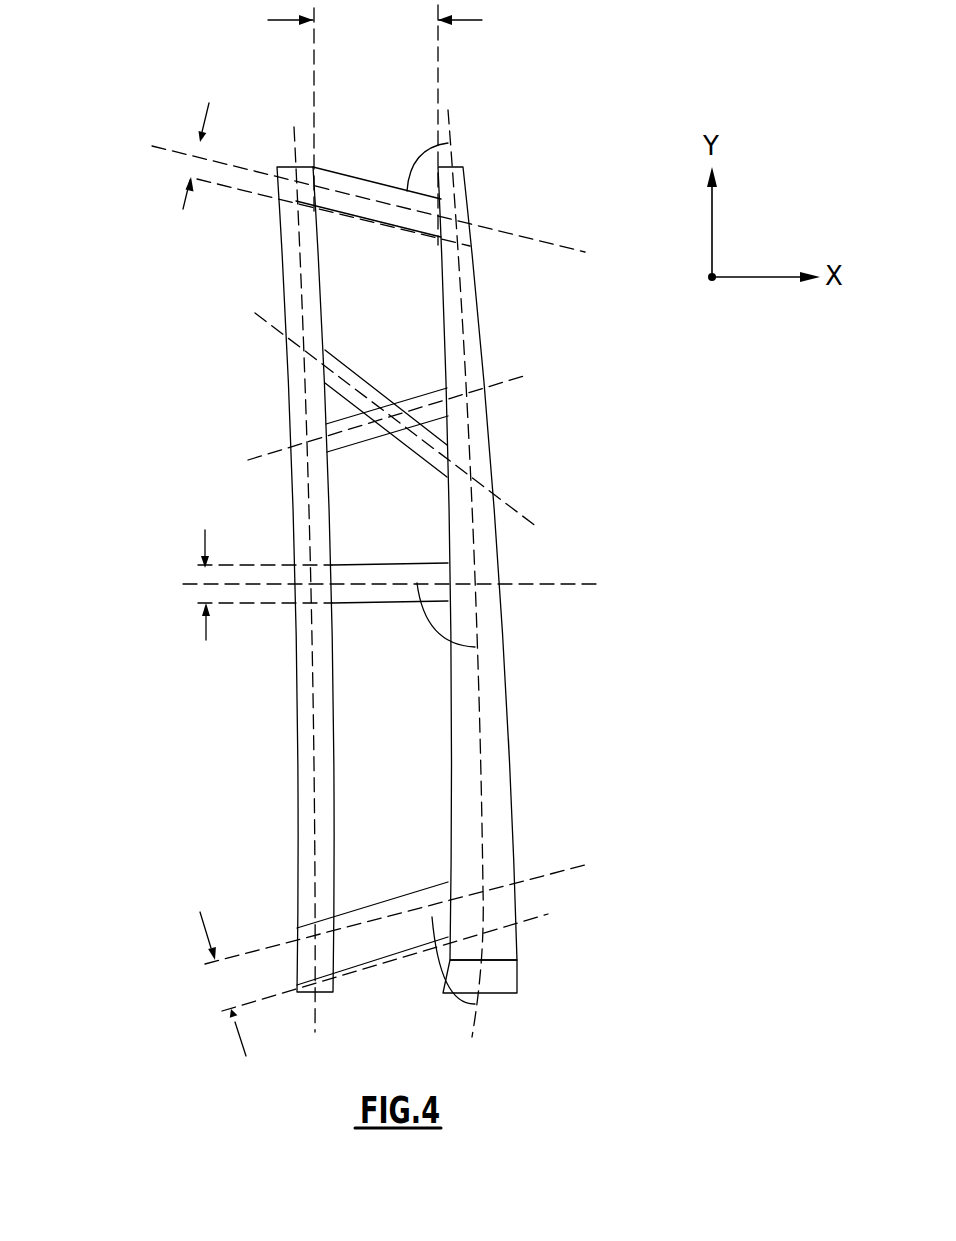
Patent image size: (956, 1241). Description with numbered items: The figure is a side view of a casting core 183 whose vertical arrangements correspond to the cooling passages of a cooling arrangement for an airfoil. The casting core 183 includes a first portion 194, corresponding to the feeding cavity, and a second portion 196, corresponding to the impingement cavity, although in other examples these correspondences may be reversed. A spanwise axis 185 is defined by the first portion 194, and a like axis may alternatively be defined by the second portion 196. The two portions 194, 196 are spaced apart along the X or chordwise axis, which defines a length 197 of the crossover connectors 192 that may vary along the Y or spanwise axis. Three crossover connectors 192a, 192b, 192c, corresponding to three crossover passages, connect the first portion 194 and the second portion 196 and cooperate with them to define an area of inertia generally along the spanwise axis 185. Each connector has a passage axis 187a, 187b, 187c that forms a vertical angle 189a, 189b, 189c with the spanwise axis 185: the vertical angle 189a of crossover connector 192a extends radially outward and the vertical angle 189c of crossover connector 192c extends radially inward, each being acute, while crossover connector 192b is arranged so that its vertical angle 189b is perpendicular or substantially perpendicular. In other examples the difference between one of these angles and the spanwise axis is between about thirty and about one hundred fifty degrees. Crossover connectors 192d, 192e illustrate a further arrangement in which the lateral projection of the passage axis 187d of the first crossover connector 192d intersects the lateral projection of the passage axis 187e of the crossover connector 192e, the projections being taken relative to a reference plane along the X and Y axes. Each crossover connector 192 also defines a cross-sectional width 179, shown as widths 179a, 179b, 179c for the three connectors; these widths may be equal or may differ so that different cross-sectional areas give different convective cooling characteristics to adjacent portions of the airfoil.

The cross-sectional width 179 is at (136, 513).
The cross-sectional width of crossover connector 192a 179a is at (208, 108).
The cross-sectional width of crossover connector 192b 179b is at (205, 530).
The cross-sectional width of crossover connector 192c 179c is at (200, 913).
The casting core 183 is at (427, 573).
The spanwise axis 185 is at (478, 702).
The passage axis of crossover connector 192a 187a is at (160, 150).
The passage axis of crossover connector 192b 187b is at (183, 584).
The passage axis of crossover connector 192c 187c is at (162, 1004).
The passage axis of crossover connector 192d 187d is at (527, 520).
The passage axis of crossover connector 192e 187e is at (527, 378).
The vertical angle 189a is at (428, 148).
The vertical angle 189b is at (432, 628).
The vertical angle 189c is at (432, 917).
The crossover connectors 192 is at (372, 557).
The crossover connector 192a is at (328, 168).
The crossover connector 192b is at (363, 564).
The crossover connector 192c is at (372, 905).
The first crossover connector 192d is at (343, 364).
The crossover connector 192e is at (435, 390).
The first portion 194 is at (512, 800).
The second portion 196 is at (288, 351).
The length 197 is at (470, 22).